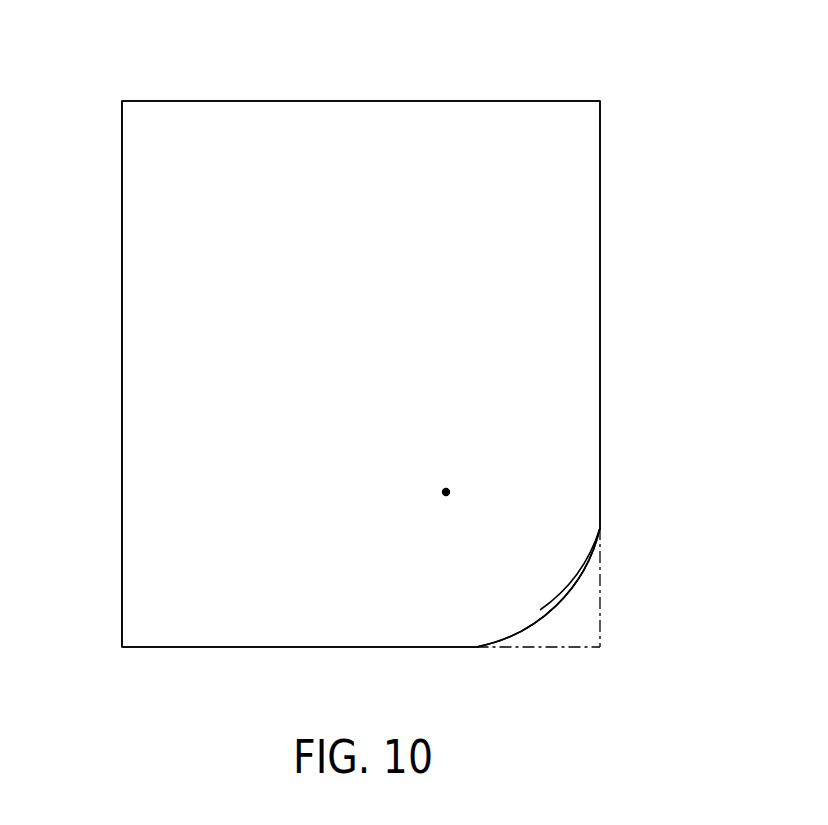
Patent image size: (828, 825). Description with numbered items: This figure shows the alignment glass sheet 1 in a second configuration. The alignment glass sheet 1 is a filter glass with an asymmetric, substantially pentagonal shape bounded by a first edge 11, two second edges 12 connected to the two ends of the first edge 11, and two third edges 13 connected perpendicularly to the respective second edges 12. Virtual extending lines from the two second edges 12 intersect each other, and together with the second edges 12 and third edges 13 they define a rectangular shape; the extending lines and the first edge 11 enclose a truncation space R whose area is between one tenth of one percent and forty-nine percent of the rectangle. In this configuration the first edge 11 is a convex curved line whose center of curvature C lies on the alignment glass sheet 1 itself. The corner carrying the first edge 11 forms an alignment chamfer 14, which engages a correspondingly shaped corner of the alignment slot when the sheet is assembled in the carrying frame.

The alignment glass sheet 1 is at (128, 262).
The first edge 11 is at (535, 622).
The second edges 12 is at (600, 320).
The third edges 13 is at (329, 101).
The alignment chamfer 14 is at (587, 562).
The center of curvature C is at (444, 488).
The truncation space R is at (602, 633).